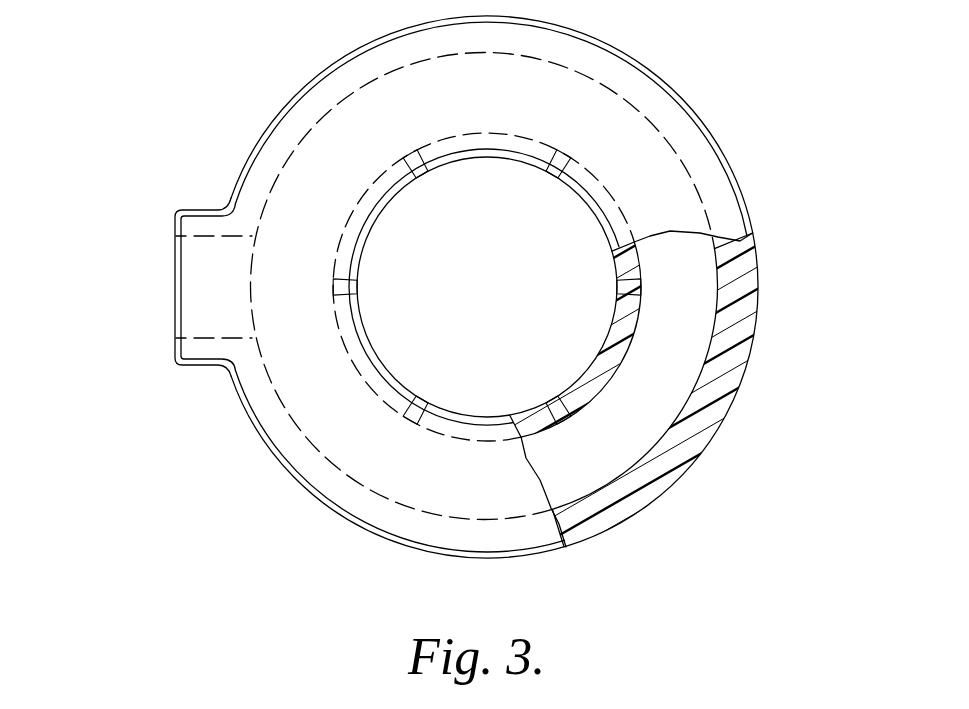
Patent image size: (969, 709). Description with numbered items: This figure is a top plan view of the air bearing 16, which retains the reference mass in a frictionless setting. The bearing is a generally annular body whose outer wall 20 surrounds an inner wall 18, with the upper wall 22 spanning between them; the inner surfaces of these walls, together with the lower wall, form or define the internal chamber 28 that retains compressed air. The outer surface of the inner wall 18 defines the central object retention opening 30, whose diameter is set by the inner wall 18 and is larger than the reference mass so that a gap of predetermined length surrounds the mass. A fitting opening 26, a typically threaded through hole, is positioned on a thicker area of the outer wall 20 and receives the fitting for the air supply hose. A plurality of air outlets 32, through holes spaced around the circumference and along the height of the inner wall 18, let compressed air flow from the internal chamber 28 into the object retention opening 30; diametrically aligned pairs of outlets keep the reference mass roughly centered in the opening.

The air bearing 16 is at (262, 95).
The inner wall 18 is at (613, 322).
The outer wall 20 is at (733, 313).
The upper wall 22 is at (623, 125).
The fitting opening 26 is at (162, 267).
The internal chamber 28 is at (645, 409).
The object retention opening 30 is at (397, 331).
The air outlets 32 is at (548, 181).